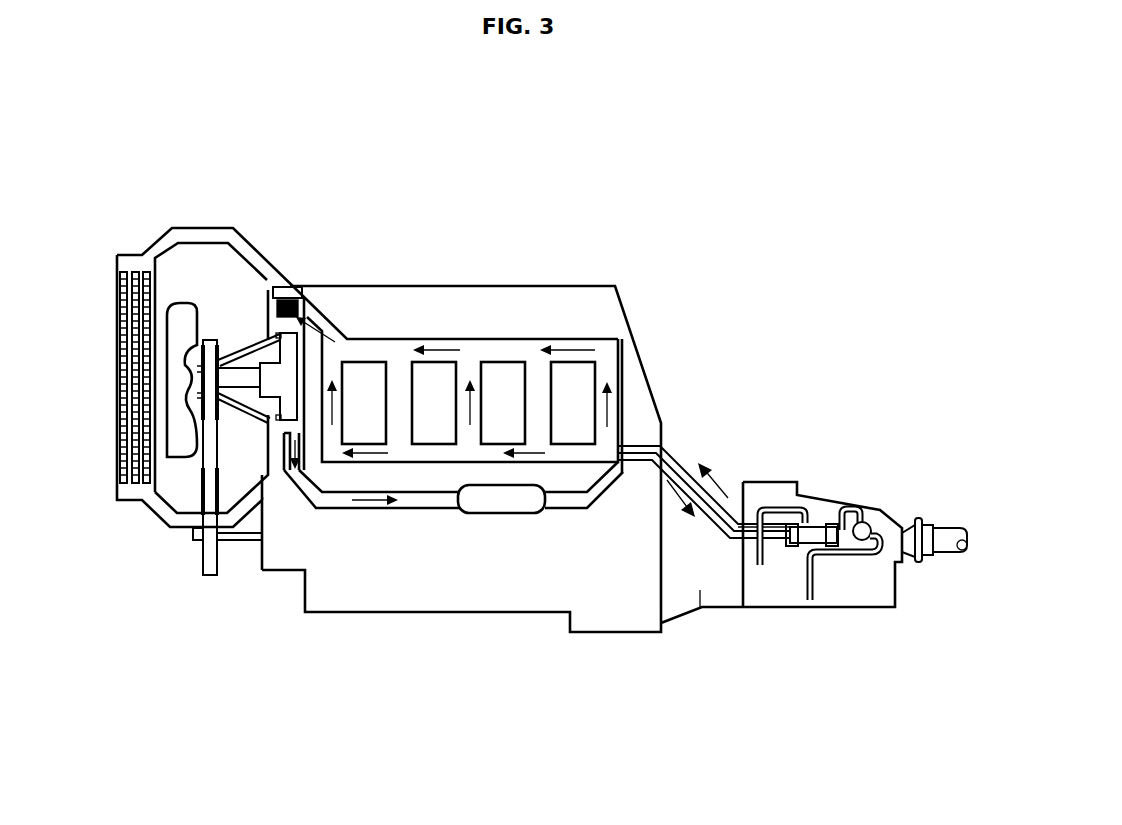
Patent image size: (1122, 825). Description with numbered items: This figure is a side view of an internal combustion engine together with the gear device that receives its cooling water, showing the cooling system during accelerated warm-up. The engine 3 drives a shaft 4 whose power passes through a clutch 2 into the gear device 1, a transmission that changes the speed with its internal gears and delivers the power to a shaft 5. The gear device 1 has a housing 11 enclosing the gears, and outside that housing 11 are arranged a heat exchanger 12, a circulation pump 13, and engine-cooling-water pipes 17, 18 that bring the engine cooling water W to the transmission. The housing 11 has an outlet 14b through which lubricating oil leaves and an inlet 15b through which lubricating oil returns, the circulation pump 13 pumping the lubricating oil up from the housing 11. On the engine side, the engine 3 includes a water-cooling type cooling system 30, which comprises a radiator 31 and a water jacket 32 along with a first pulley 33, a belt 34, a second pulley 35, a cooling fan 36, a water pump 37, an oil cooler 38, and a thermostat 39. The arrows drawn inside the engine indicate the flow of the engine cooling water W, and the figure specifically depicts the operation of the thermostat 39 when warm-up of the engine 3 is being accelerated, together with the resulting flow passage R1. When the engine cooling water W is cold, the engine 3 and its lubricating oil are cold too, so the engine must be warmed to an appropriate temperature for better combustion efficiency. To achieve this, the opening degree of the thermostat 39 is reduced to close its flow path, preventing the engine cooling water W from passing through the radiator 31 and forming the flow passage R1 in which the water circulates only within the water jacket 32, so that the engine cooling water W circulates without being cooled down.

The gear device 1 is at (789, 479).
The clutch 2 is at (685, 563).
The engine 3 is at (443, 590).
The shaft 4 is at (233, 540).
The shaft 5 is at (947, 540).
The housing 11 is at (873, 577).
The heat exchanger 12 is at (826, 512).
The circulation pump 13 is at (865, 523).
The outlet 14b is at (810, 600).
The inlet 15b is at (760, 570).
The engine-cooling-water pipe 17 is at (718, 530).
The engine-cooling-water pipe 18 is at (680, 460).
The cooling system 30 is at (142, 527).
The radiator 31 is at (118, 283).
The water jacket 32 is at (398, 375).
The first pulley 33 is at (208, 572).
The belt 34 is at (203, 545).
The second pulley 35 is at (217, 347).
The cooling fan 36 is at (180, 335).
The water pump 37 is at (287, 350).
The oil cooler 38 is at (503, 507).
The thermostat 39 is at (287, 288).
The flow passage R1 is at (557, 360).
The engine cooling water W is at (608, 357).